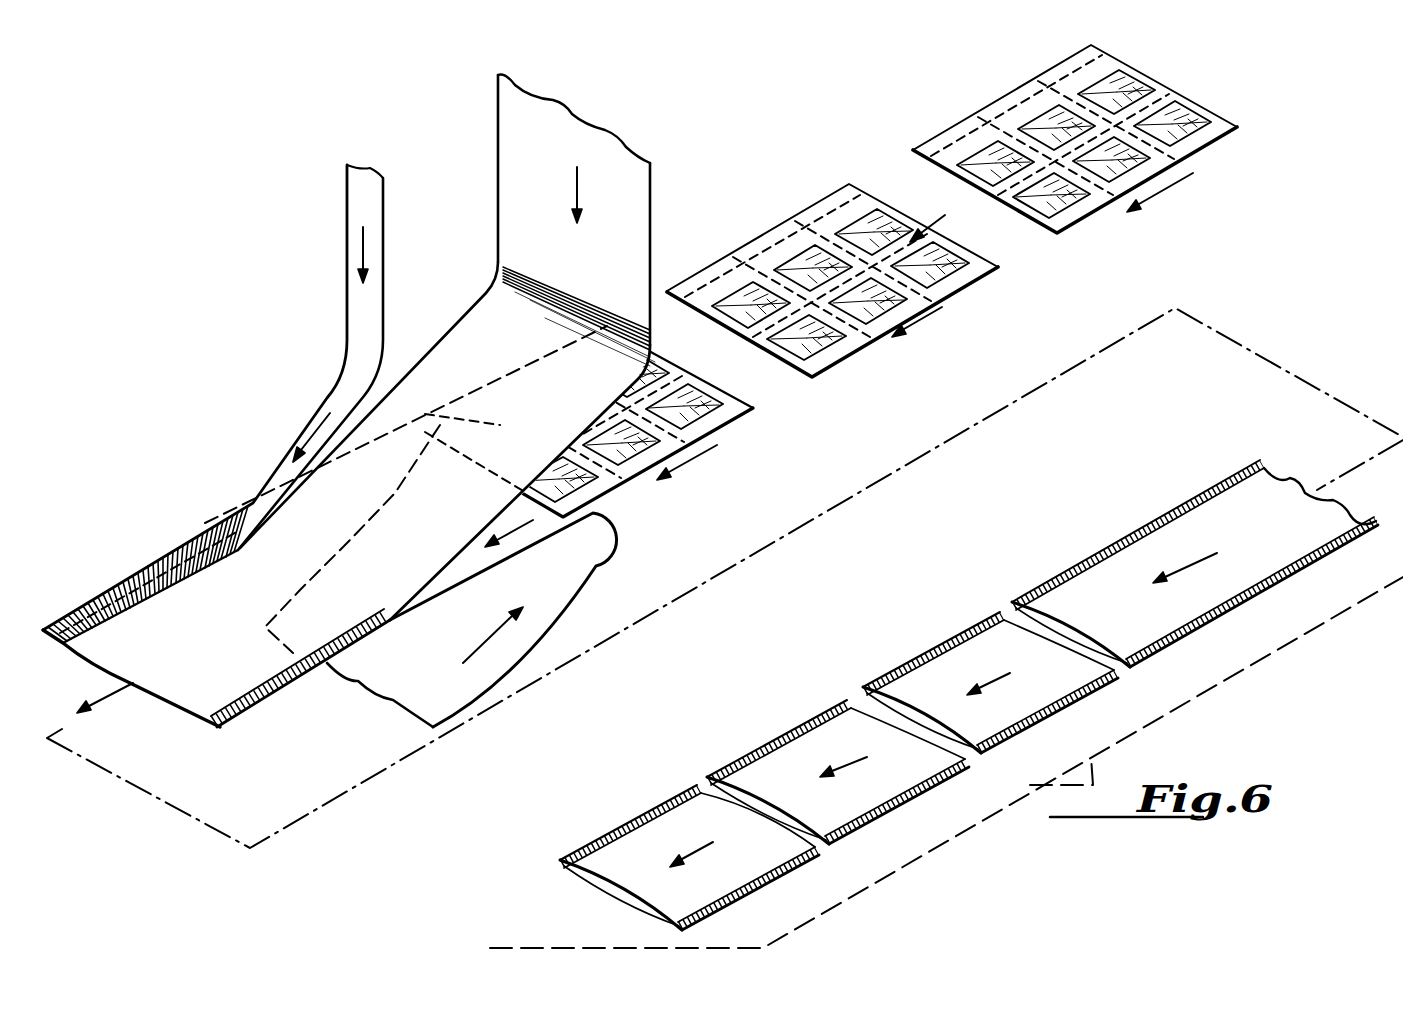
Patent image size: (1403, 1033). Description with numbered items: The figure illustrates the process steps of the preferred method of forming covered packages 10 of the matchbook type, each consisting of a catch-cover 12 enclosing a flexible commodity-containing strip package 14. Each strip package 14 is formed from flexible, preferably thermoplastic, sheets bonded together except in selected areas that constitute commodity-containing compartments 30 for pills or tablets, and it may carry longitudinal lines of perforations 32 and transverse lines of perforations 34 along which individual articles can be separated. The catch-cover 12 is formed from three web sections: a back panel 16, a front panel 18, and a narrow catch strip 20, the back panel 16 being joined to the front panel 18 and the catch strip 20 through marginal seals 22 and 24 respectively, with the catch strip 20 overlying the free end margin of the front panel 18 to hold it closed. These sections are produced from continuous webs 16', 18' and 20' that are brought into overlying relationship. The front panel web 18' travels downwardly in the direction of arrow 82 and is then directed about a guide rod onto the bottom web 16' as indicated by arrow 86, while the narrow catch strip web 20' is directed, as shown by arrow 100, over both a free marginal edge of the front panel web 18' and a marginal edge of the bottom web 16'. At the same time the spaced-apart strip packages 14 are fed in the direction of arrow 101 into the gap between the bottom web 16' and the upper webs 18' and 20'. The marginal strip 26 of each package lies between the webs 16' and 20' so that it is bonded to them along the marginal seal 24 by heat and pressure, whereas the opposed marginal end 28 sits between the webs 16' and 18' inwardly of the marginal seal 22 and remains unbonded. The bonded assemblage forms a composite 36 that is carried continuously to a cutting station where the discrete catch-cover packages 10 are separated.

The covered package 10 is at (629, 793).
The catch-cover 12 is at (695, 787).
The strip package 14 is at (1237, 127).
The back panel web section 16 is at (590, 902).
The continuous bottom web 16' is at (488, 620).
The front panel web section 18 is at (636, 917).
The continuous front panel web 18' is at (427, 457).
The catch strip 20 is at (559, 805).
The continuous catch strip web 20' is at (213, 397).
The marginal seal 22 is at (278, 697).
The marginal seal 24 is at (137, 585).
The marginal strip 26 is at (767, 245).
The opposed marginal end 28 is at (928, 298).
The commodity-containing compartment 30 is at (807, 265).
The longitudinal line of perforations 32 is at (730, 283).
The transverse line of perforations 34 is at (828, 236).
The composite 36 is at (167, 556).
The arrow 82 is at (577, 183).
The arrow 86 is at (448, 459).
The arrow 100 is at (318, 418).
The arrow 101 is at (703, 457).